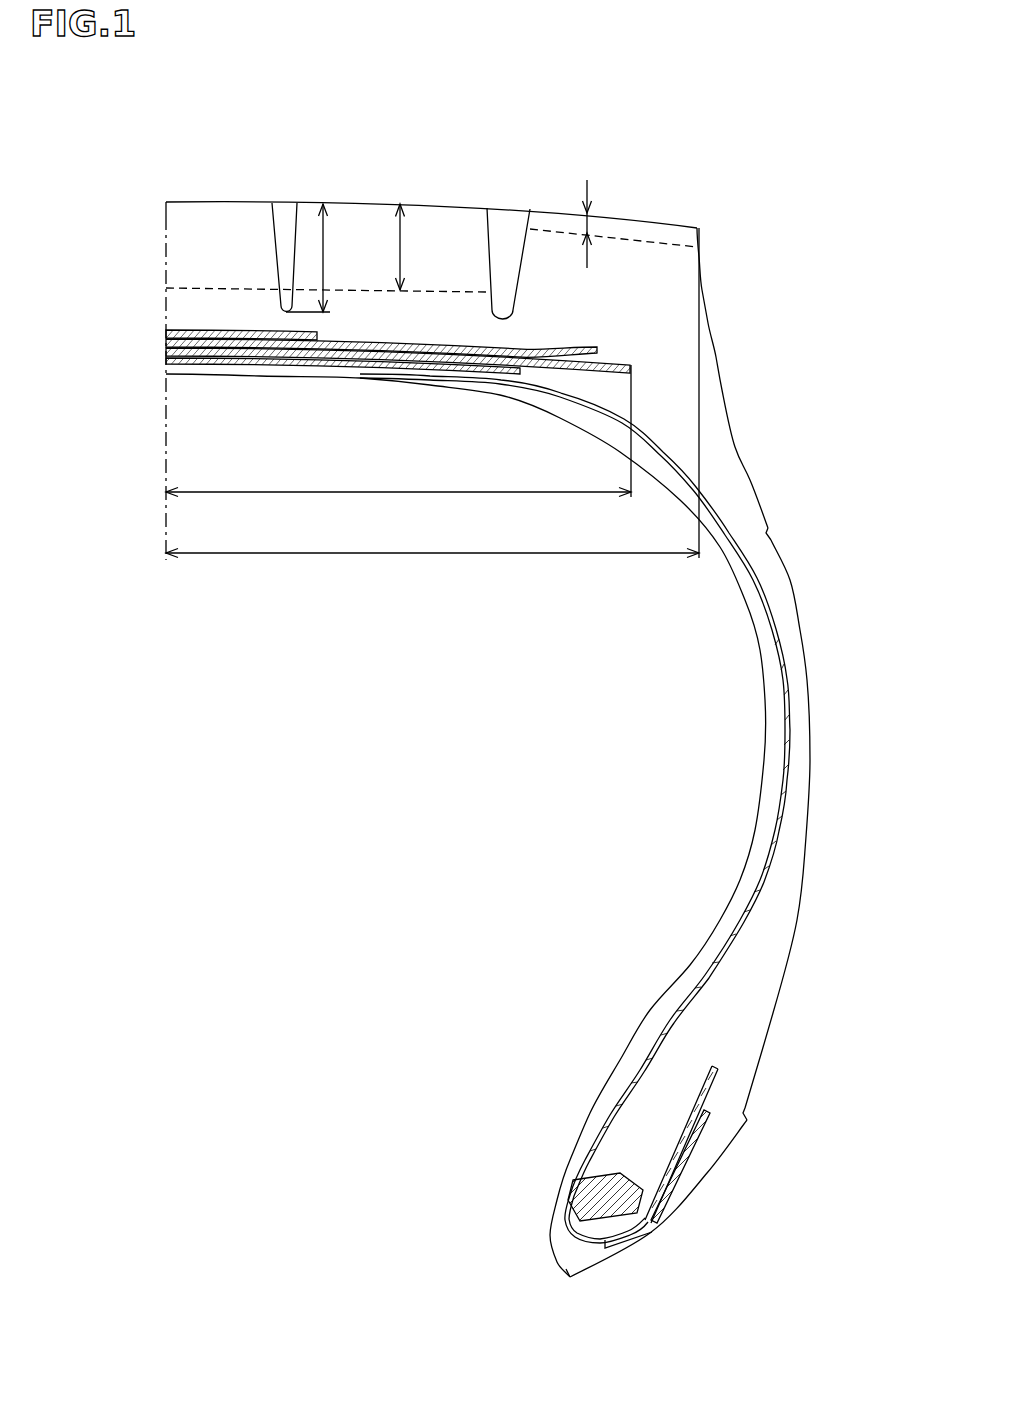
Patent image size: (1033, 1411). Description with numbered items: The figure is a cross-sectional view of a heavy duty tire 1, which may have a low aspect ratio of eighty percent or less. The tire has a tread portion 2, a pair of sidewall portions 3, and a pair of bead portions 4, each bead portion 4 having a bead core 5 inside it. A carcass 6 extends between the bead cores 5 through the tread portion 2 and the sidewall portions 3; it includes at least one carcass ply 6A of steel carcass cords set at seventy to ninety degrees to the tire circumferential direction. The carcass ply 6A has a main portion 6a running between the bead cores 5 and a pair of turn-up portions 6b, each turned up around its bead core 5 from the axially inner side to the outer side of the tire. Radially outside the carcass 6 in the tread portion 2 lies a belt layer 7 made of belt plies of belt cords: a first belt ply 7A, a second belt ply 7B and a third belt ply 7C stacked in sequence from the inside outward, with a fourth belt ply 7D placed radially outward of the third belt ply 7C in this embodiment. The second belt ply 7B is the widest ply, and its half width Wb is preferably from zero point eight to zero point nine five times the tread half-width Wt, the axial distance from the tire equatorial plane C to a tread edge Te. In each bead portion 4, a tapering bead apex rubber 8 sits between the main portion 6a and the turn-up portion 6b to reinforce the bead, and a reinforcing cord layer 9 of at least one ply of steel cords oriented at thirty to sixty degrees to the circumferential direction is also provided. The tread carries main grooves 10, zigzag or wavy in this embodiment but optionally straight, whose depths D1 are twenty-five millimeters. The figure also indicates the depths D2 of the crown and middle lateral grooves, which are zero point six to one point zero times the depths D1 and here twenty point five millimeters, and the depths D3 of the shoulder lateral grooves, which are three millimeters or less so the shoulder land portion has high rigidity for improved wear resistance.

The heavy duty tire 1 is at (742, 282).
The tread portion 2 is at (668, 162).
The sidewall portion 3 is at (826, 722).
The bead portion 4 is at (525, 1152).
The bead core 5 is at (593, 1202).
The carcass 6 is at (575, 808).
The carcass ply 6A is at (575, 808).
The main portion 6a is at (652, 1043).
The turn-up portion 6b is at (700, 1087).
The belt layer 7 is at (319, 351).
The first belt ply 7A is at (286, 397).
The second belt ply 7B is at (166, 354).
The third belt ply 7C is at (166, 340).
The fourth belt ply 7D is at (166, 331).
The bead apex rubber 8 is at (630, 1103).
The reinforcing cord layer 9 is at (683, 1152).
The main groove 10 is at (285, 222).
The tire equatorial plane C is at (166, 352).
The tread edge Te is at (707, 223).
The half width of the second belt ply Wb is at (398, 445).
The tread half-width Wt is at (432, 570).
The depth of the main grooves D1 is at (323, 255).
The depth of the lateral grooves D2 is at (400, 245).
The depth of the shoulder lateral grooves D3 is at (586, 226).